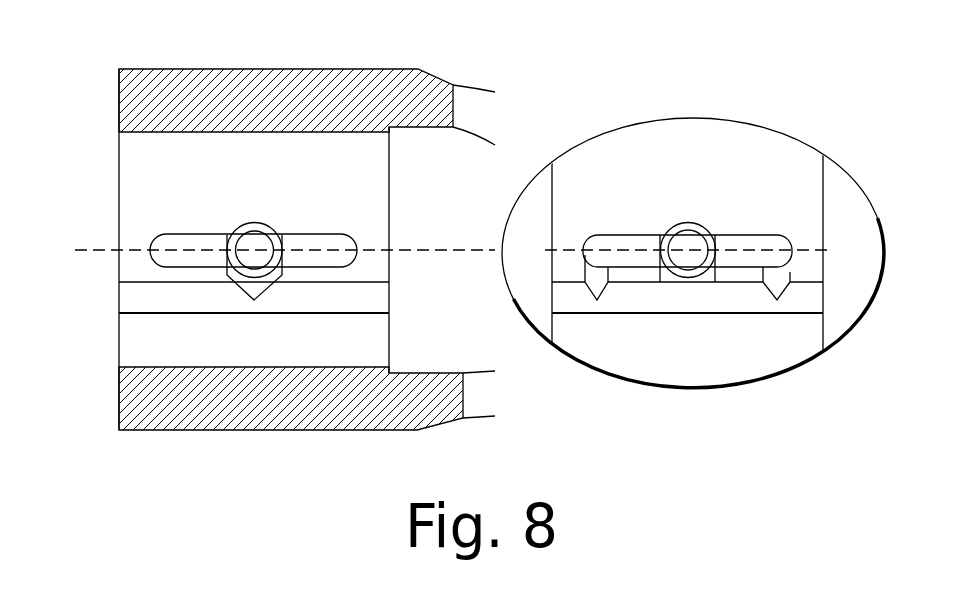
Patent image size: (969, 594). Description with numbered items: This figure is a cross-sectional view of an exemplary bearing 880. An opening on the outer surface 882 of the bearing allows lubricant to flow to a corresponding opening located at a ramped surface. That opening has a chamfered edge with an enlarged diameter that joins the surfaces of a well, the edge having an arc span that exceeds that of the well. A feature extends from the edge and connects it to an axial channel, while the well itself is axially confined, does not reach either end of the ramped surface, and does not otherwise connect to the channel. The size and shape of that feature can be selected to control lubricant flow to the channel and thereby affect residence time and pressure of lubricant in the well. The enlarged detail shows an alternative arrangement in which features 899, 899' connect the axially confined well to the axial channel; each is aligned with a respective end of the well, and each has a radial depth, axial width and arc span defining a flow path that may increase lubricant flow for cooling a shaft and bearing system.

The bearing 880 is at (148, 27).
The outer surface 882 is at (294, 69).
The feature 899 is at (625, 311).
The feature 899' is at (747, 315).